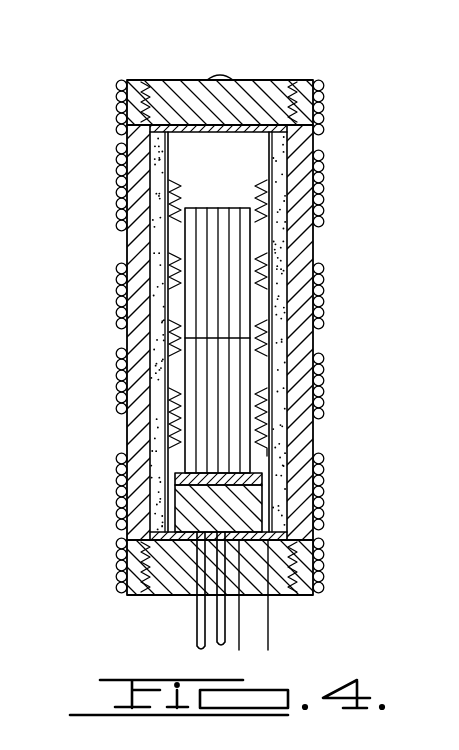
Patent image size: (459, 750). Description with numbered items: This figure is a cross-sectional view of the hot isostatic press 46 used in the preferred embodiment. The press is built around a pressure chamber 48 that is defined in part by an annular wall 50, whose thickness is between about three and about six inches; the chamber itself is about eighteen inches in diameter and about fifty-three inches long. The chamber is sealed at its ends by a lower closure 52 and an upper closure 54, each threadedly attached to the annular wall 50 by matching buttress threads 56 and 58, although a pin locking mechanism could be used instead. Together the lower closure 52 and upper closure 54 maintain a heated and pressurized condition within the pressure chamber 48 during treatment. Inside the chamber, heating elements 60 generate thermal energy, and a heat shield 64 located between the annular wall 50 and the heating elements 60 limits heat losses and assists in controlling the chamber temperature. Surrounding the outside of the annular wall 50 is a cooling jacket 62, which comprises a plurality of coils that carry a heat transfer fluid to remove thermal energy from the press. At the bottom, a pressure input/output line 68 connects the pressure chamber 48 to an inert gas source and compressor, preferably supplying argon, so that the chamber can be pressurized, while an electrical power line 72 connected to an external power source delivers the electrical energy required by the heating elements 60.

The hot isostatic press 46 is at (309, 64).
The pressure chamber 48 is at (204, 156).
The annular wall 50 is at (140, 198).
The lower closure 52 is at (162, 565).
The upper closure 54 is at (163, 98).
The buttress threads 56 is at (298, 560).
The buttress threads 58 is at (297, 107).
The heating elements 60 is at (185, 245).
The cooling jacket 62 is at (122, 372).
The heat shield 64 is at (158, 328).
The pressure input/output line 68 is at (218, 613).
The electrical power line 72 is at (270, 617).